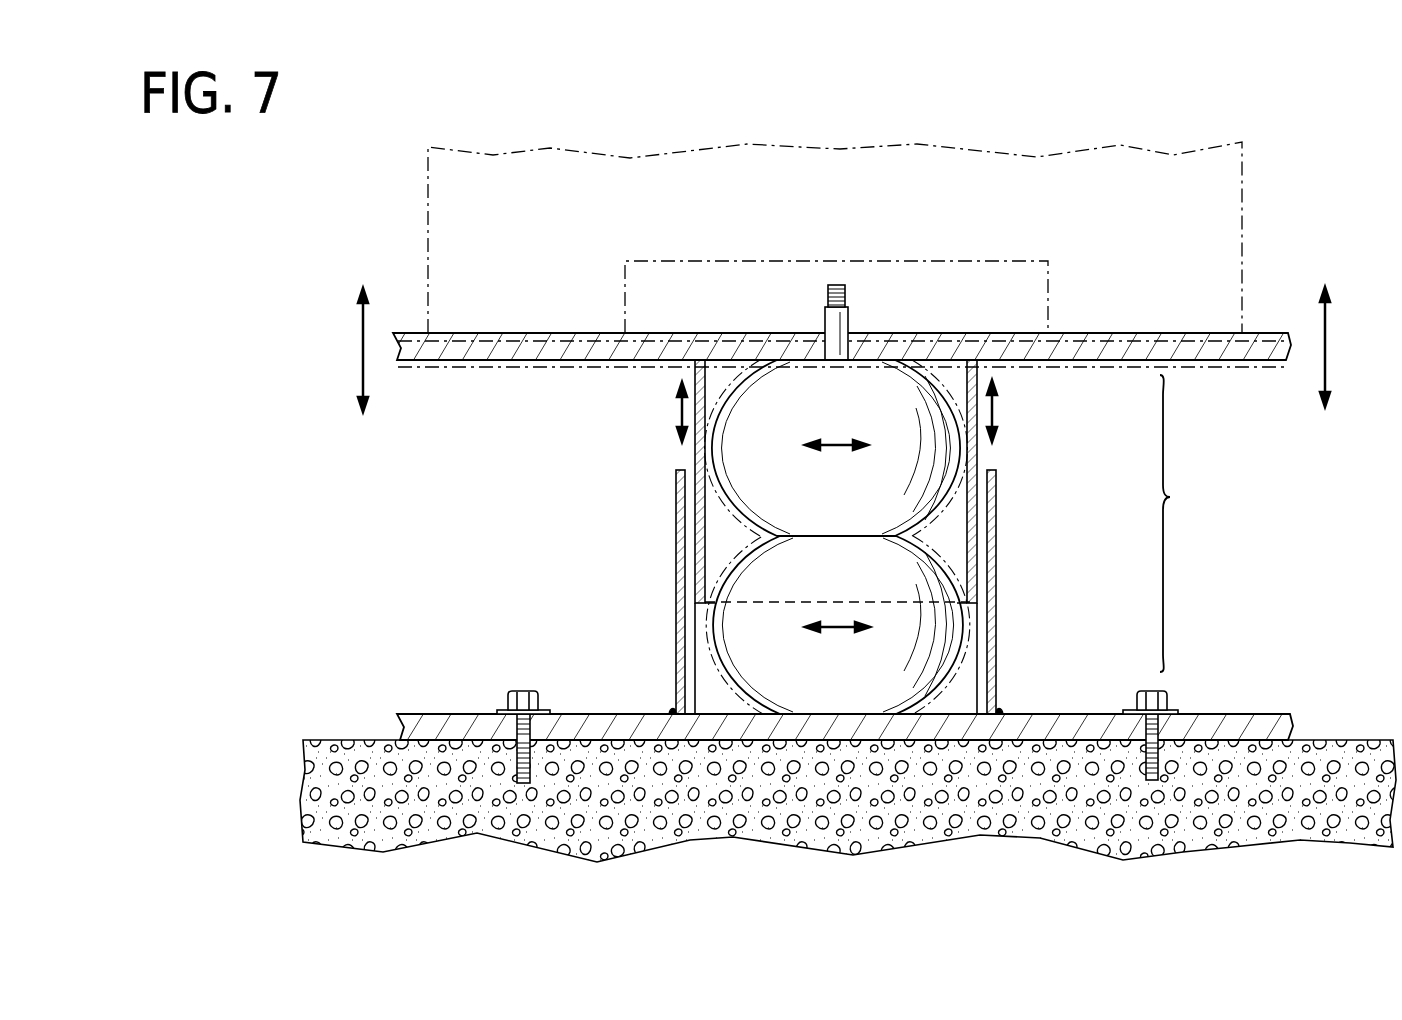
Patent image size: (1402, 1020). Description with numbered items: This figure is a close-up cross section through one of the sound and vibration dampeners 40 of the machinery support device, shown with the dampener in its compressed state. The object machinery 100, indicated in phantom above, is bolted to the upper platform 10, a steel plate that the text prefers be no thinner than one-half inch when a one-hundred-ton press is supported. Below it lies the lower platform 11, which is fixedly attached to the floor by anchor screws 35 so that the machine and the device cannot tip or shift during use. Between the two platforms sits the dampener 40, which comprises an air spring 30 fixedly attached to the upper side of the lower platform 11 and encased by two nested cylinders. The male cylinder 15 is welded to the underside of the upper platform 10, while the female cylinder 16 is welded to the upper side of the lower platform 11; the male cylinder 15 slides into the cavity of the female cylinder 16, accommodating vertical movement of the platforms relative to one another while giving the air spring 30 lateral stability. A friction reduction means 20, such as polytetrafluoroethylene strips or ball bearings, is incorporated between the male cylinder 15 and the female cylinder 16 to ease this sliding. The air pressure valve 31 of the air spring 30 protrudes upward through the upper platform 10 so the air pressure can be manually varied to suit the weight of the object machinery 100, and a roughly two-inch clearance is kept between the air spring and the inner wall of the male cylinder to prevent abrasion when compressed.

The object machinery 100 is at (1225, 193).
The upper platform 10 is at (1268, 333).
The air pressure valve 31 is at (845, 295).
The male cylinder 15 is at (975, 453).
The friction reduction means 20 is at (983, 500).
The air spring 30 is at (763, 553).
The female cylinder 16 is at (678, 598).
The vibration sound dampener 40 is at (1189, 523).
The anchor screws 35 is at (507, 700).
The lower platform 11 is at (1268, 714).